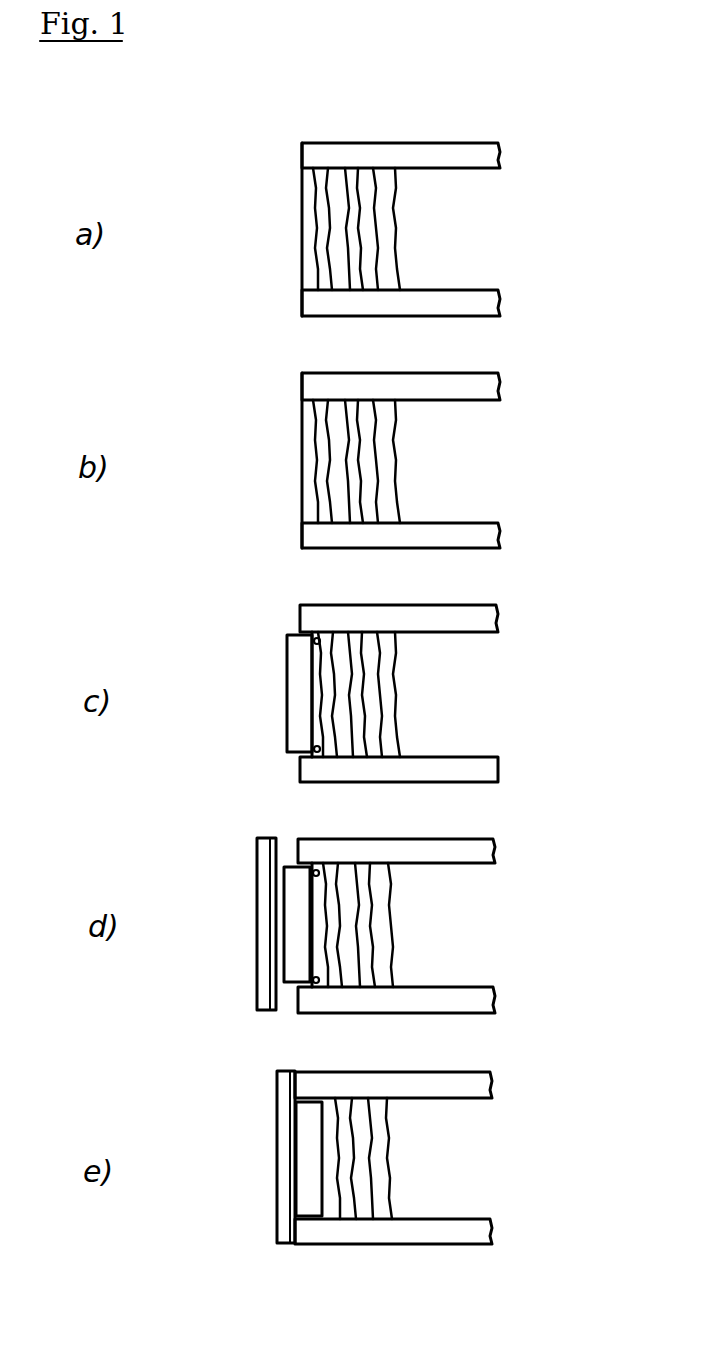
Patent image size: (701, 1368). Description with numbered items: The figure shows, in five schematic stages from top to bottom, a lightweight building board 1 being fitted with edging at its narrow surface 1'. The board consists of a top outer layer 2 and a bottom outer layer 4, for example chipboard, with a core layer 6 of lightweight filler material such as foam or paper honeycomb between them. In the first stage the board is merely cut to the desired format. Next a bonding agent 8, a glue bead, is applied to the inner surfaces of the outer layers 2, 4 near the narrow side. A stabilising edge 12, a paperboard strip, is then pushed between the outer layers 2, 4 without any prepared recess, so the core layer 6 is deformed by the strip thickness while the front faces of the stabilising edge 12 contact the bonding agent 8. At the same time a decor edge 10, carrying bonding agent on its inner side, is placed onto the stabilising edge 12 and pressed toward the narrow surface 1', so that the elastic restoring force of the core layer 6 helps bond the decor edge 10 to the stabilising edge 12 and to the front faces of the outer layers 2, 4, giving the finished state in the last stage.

The lightweight building board 1 is at (416, 709).
The narrow surface 1' is at (267, 217).
The top outer layer 2 is at (452, 1128).
The bottom outer layer 4 is at (475, 255).
The core layer 6 is at (408, 1180).
The bonding agent 8 is at (305, 400).
The decor edge 10 is at (282, 1168).
The stabilising edge 12 is at (370, 1287).